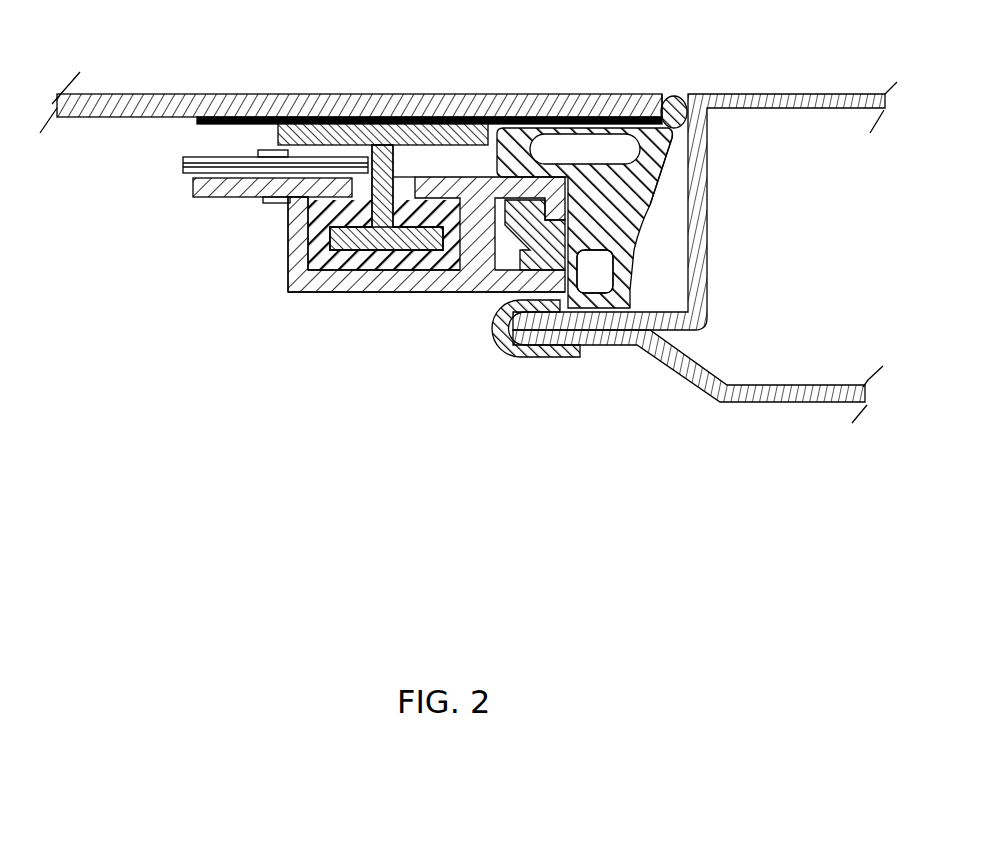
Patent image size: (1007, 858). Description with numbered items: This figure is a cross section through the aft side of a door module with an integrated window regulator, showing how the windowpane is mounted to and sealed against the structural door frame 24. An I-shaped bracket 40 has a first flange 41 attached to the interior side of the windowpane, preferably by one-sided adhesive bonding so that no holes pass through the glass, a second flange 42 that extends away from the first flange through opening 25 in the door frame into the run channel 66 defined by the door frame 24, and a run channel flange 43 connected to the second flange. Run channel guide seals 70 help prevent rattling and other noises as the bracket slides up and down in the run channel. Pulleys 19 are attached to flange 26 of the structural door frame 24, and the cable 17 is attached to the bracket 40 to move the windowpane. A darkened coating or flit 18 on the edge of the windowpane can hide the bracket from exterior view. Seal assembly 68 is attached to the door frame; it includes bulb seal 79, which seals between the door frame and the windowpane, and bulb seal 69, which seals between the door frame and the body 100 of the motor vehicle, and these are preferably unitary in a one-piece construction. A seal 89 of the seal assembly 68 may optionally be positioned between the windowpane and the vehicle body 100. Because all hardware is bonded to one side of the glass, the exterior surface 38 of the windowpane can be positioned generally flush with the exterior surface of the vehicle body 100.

The cable 17 is at (225, 157).
The darkened coating or flit 18 is at (660, 96).
The pulleys 19 is at (185, 160).
The structural door frame 24 is at (453, 292).
The opening 25 is at (290, 238).
The flange 26 is at (193, 192).
The exterior surface 38 is at (187, 93).
The bracket 40 is at (295, 122).
The first flange 41 is at (397, 157).
The second flange 42 is at (400, 173).
The run channel flange 43 is at (387, 253).
The run channel 66 is at (288, 290).
The seal assembly 68 is at (648, 197).
The bulb seal 69 is at (636, 272).
The run channel guide seals 70 is at (307, 292).
The bulb seal 79 is at (510, 143).
The seal 89 is at (677, 122).
The body of the motor vehicle 100 is at (757, 92).